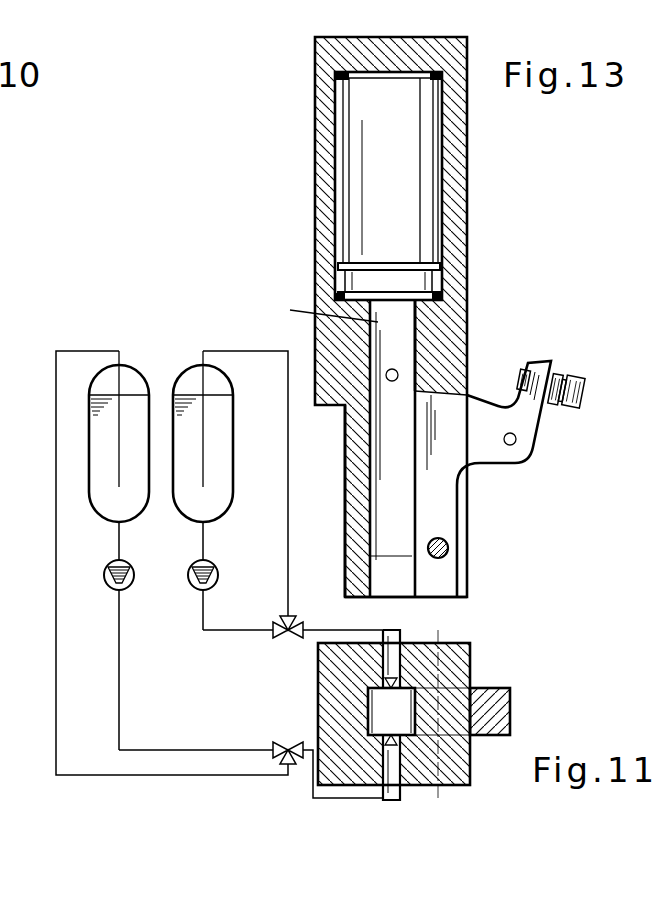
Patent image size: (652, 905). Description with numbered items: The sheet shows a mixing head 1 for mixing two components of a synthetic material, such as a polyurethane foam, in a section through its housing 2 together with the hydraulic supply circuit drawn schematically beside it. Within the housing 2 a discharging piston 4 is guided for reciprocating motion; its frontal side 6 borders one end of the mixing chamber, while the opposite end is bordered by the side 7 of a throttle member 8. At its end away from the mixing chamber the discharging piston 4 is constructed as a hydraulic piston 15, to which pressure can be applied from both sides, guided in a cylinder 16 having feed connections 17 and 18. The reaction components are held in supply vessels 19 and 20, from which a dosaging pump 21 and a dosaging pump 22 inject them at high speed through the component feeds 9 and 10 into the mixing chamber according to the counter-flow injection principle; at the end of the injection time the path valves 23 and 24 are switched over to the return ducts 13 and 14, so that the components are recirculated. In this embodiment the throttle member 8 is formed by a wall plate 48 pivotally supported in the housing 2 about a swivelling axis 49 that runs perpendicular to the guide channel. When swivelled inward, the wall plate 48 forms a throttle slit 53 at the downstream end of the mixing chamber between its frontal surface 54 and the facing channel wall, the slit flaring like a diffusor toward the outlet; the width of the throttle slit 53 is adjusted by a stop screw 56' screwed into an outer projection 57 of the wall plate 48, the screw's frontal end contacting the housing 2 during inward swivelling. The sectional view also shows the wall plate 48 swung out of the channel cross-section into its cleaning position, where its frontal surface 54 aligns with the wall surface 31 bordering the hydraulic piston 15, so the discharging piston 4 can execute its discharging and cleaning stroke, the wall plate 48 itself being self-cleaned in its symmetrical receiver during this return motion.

In FIG. 13, the mixing head 1 is at (310, 220).
In FIG. 13, the housing 2 is at (345, 350).
In FIG. 13, the discharging piston 4 is at (386, 462).
In FIG. 13, the frontal side of the discharging piston 6 is at (410, 596).
In FIG. 13, the side of the throttle member 7 is at (434, 396).
In FIG. 11, the side of the throttle member 7 is at (385, 702).
In FIG. 13, the throttle member 8 is at (326, 305).
In FIG. 11, the component feed 9 is at (400, 792).
In FIG. 11, the component feed 10 is at (400, 637).
In FIG. 11, the return duct 13 is at (55, 563).
In FIG. 11, the return duct 14 is at (287, 505).
In FIG. 13, the hydraulic piston 15 is at (435, 282).
In FIG. 13, the cylinder 16 is at (355, 150).
In FIG. 13, the feed connection 17 is at (320, 76).
In FIG. 13, the feed connection 18 is at (322, 298).
In FIG. 11, the supply vessel 19 is at (128, 378).
In FIG. 11, the supply vessel 20 is at (189, 380).
In FIG. 11, the dosaging pump 21 is at (104, 578).
In FIG. 11, the dosaging pump 22 is at (219, 578).
In FIG. 11, the path valve 23 is at (285, 744).
In FIG. 11, the path valve 24 is at (287, 634).
In FIG. 13, the wall surface of the channel 31 is at (425, 347).
In FIG. 13, the wall plate 48 is at (488, 456).
In FIG. 11, the wall plate 48 is at (496, 700).
In FIG. 13, the swivelling axis 49 is at (449, 549).
In FIG. 11, the swivelling axis 49 is at (440, 664).
In FIG. 11, the throttle slit 53 is at (385, 722).
In FIG. 13, the frontal surface of the wall plate 54 is at (370, 556).
In FIG. 13, the stop screw 56' is at (568, 370).
In FIG. 13, the outer projection 57 is at (530, 412).